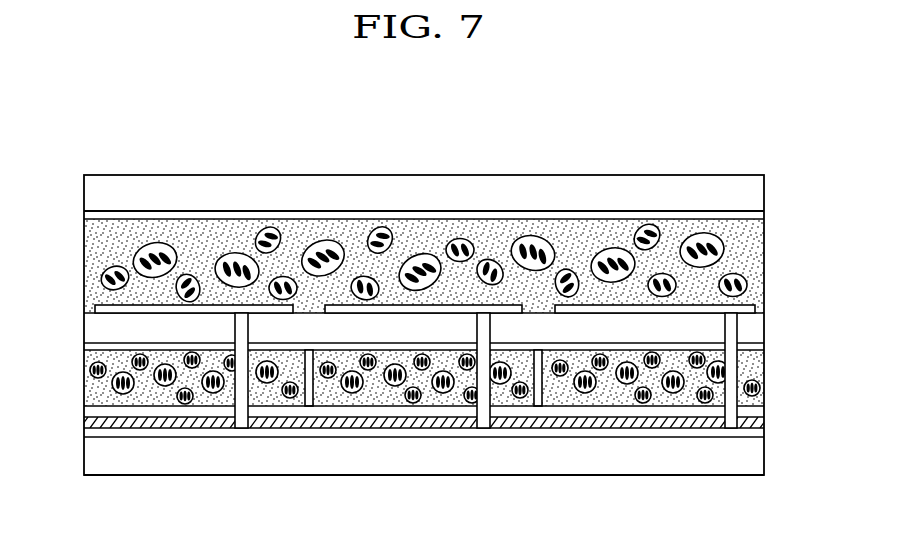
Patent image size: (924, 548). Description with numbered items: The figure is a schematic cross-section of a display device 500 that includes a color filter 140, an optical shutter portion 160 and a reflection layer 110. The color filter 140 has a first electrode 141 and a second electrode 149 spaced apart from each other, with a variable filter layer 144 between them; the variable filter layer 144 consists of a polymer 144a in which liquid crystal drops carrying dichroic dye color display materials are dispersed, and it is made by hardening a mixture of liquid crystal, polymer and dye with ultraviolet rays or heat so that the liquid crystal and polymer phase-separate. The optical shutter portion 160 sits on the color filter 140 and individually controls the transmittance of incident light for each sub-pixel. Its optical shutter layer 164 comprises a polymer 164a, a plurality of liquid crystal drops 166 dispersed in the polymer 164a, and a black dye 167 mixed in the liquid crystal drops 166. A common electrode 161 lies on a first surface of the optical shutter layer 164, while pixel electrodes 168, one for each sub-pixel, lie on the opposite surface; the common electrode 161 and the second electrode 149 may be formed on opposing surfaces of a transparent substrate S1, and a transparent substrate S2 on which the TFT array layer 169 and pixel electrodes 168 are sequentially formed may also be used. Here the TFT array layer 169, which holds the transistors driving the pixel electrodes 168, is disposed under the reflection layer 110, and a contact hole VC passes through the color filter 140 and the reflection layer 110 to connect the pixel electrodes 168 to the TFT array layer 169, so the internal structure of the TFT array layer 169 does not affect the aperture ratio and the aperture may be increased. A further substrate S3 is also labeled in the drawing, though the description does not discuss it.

The display device 500 is at (760, 147).
The transparent substrate S1 is at (90, 333).
The transparent substrate S2 is at (90, 193).
The third substrate S3 is at (90, 463).
The optical shutter portion 160 is at (454, 266).
The common electrode 161 is at (762, 212).
The optical shutter layer 164 is at (492, 262).
The polymer 164a is at (768, 285).
The liquid crystal drops 166 is at (722, 261).
The black dye 167 is at (718, 246).
The pixel electrodes 168 is at (752, 306).
The contact hole VC is at (733, 325).
The second electrode 149 is at (762, 345).
The color filter 140 is at (431, 381).
The variable filter layer 144 is at (772, 389).
The polymer 144a is at (760, 368).
The first electrode 141 is at (762, 409).
The TFT array layer 169 is at (762, 433).
The reflection layer 110 is at (626, 424).